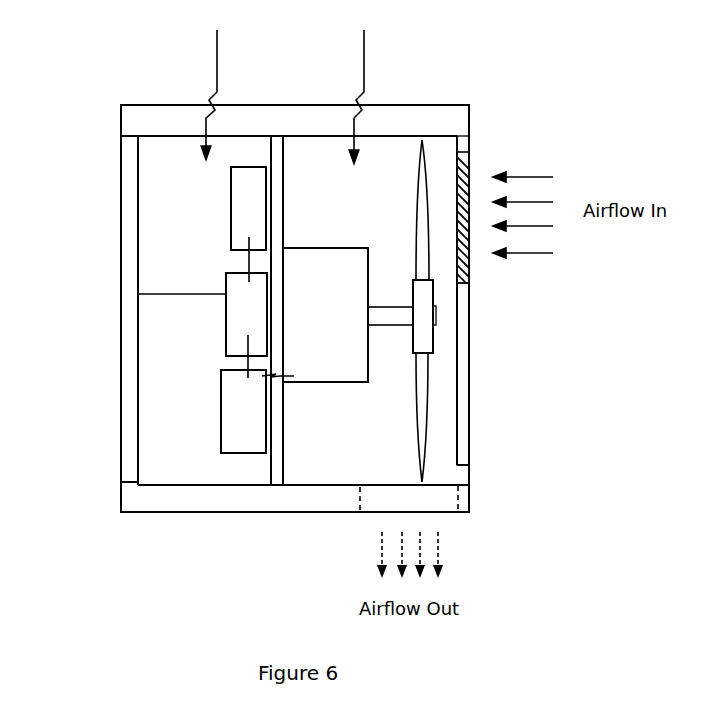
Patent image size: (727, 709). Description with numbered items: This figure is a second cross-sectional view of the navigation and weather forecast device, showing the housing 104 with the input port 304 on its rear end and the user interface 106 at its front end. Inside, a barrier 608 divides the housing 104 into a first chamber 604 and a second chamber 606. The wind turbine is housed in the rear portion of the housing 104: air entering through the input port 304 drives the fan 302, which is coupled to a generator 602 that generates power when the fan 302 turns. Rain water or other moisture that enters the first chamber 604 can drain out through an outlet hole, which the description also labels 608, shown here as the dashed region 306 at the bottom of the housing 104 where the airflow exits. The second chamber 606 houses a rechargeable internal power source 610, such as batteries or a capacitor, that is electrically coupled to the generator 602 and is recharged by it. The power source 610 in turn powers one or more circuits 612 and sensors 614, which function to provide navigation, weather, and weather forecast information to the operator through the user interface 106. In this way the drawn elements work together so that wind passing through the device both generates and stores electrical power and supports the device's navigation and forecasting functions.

The housing 104 is at (347, 249).
The user interface 106 is at (238, 308).
The fan 302 is at (431, 246).
The input port 304 is at (499, 199).
The air outlet 306 is at (373, 530).
The generator 602 is at (348, 274).
The first chamber 604 is at (360, 87).
The second chamber 606 is at (214, 85).
The barrier 608 is at (315, 310).
The rechargeable internal power source 610 is at (225, 411).
The circuits 612 is at (212, 325).
The sensors 614 is at (211, 224).